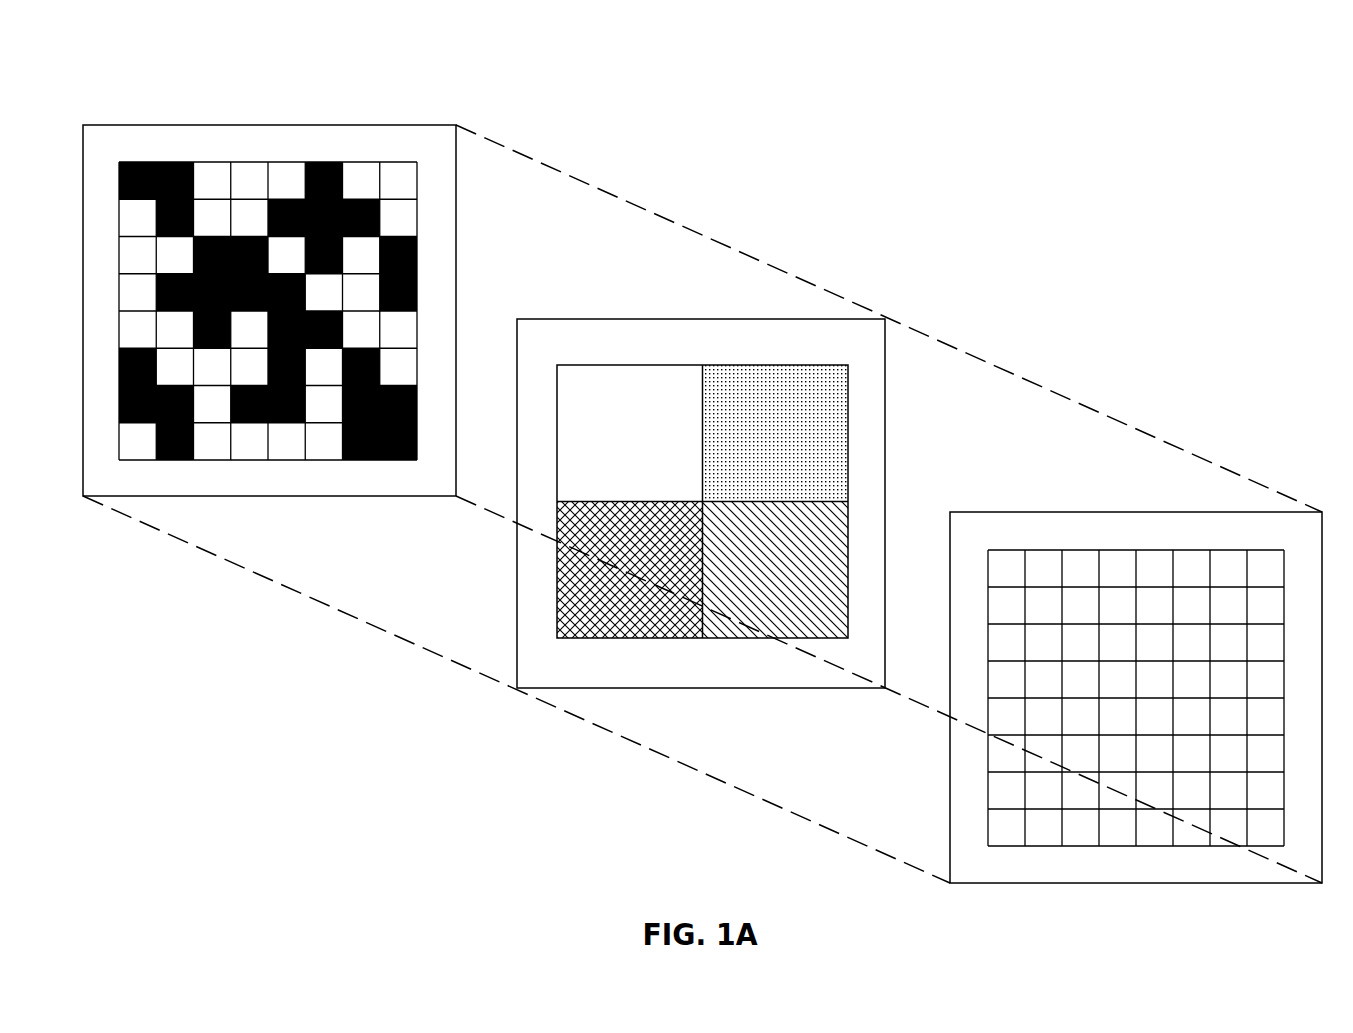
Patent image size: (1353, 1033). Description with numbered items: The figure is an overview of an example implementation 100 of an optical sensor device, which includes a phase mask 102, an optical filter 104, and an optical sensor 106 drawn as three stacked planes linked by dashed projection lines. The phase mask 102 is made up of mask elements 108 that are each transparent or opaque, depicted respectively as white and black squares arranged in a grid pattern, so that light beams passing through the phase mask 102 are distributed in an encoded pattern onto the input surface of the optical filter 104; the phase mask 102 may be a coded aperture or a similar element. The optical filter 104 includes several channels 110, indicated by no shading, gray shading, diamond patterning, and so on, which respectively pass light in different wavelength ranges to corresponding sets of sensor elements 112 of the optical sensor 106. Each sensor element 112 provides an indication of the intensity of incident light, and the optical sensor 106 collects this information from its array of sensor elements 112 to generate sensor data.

The example implementation 100 is at (220, 57).
The phase mask 102 is at (353, 156).
The optical filter 104 is at (787, 351).
The optical sensor 106 is at (1234, 544).
The mask elements 108 is at (418, 253).
The channels 110 is at (740, 470).
The sensor elements 112 is at (1043, 826).